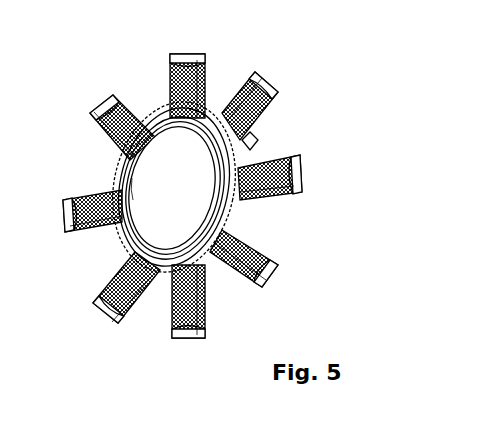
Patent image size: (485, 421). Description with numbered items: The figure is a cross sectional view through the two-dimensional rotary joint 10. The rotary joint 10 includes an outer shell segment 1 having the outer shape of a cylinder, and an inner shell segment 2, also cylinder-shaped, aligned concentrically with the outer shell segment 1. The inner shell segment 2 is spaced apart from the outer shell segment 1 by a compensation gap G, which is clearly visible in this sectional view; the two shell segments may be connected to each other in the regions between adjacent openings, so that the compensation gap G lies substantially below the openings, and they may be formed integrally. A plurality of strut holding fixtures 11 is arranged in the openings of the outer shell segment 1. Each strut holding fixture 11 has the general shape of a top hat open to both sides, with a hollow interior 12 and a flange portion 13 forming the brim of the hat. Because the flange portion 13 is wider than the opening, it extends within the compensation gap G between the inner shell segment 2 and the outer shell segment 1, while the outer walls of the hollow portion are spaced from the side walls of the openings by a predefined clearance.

The two-dimensional rotary joint 10 is at (98, 82).
The outer shell segment 1 is at (148, 106).
The inner shell segment 2 is at (165, 133).
The strut holding fixture 11 is at (244, 80).
The hollow interior 12 is at (254, 109).
The flange portion 13 is at (250, 144).
The compensation gap G is at (132, 178).